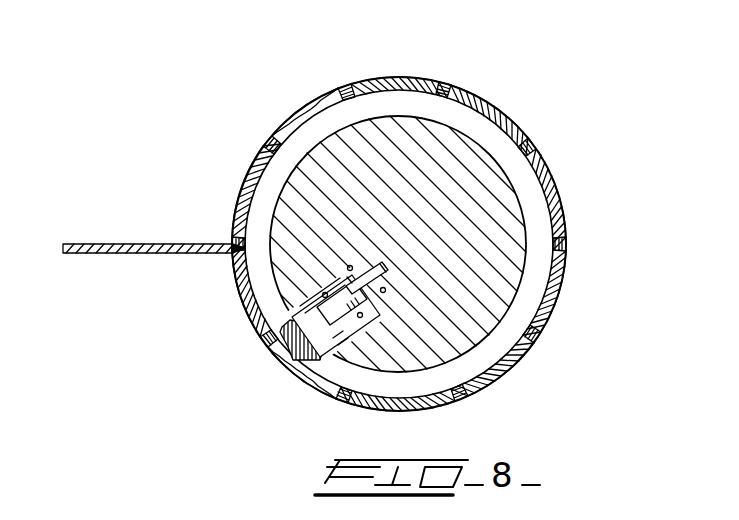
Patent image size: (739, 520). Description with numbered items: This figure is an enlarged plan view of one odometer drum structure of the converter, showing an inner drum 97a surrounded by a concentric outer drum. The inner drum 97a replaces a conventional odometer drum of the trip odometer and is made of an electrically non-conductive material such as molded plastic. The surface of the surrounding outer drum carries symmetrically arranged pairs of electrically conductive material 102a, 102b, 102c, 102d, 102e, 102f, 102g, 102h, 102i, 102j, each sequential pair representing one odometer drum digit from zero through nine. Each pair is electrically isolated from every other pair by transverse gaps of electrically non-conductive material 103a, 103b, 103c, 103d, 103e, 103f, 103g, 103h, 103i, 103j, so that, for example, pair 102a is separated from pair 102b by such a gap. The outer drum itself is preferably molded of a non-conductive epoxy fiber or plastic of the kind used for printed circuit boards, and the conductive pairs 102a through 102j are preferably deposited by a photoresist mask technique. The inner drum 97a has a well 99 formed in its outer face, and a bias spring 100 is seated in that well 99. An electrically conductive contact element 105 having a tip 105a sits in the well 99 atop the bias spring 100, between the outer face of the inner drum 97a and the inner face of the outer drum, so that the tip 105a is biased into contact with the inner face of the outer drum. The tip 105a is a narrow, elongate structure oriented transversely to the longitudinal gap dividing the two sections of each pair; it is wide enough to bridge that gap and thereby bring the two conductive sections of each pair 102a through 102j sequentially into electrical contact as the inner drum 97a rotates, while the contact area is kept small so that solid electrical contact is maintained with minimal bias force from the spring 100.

The inner drum 97a is at (510, 222).
The well 99 is at (327, 290).
The bias spring 100 is at (368, 280).
The pair of electrically conductive material 102a is at (240, 185).
The pair of electrically conductive material 102b is at (302, 103).
The pair of electrically conductive material 102c is at (397, 80).
The pair of electrically conductive material 102d is at (510, 84).
The pair of electrically conductive material 102e is at (553, 187).
The pair of electrically conductive material 102f is at (560, 293).
The pair of electrically conductive material 102g is at (505, 378).
The pair of electrically conductive material 102h is at (403, 413).
The pair of electrically conductive material 102i is at (285, 372).
The pair of electrically conductive material 102j is at (245, 290).
The transverse gap of electrically non-conductive material 103a is at (265, 143).
The transverse gap of electrically non-conductive material 103b is at (343, 86).
The transverse gap of electrically non-conductive material 103c is at (447, 82).
The transverse gap of electrically non-conductive material 103d is at (530, 147).
The transverse gap of electrically non-conductive material 103e is at (566, 244).
The transverse gap of electrically non-conductive material 103f is at (537, 337).
The transverse gap of electrically non-conductive material 103g is at (462, 395).
The transverse gap of electrically non-conductive material 103h is at (343, 393).
The transverse gap of electrically non-conductive material 103i is at (267, 343).
The transverse gap of electrically non-conductive material 103j is at (232, 250).
The electrically conductive contact element 105 is at (342, 335).
The tip 105a is at (293, 360).